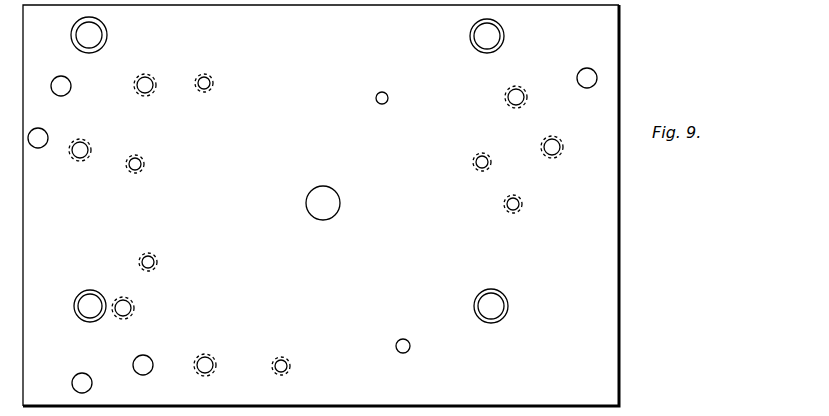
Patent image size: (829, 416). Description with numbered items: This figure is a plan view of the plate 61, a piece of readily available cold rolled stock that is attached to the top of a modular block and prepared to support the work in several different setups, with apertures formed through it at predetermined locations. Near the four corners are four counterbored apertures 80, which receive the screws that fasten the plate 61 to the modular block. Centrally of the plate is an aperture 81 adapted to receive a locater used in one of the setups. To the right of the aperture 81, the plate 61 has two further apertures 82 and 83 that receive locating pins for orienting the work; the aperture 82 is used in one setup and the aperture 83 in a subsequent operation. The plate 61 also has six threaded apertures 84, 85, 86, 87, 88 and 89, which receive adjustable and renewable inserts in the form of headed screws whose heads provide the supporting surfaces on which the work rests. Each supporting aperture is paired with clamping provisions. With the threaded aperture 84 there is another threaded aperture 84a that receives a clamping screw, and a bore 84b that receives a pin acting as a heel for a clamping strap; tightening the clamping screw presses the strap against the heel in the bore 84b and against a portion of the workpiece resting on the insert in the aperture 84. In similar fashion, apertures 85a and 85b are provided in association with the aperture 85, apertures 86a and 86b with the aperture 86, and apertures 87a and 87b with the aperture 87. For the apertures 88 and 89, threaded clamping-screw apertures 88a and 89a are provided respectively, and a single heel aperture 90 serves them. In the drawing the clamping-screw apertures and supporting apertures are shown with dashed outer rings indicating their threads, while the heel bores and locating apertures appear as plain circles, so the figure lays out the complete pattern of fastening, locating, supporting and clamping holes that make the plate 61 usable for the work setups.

The plate 61 is at (626, 69).
The counterbored apertures 80 is at (104, 35).
The central aperture 81 is at (322, 196).
The aperture 82 is at (386, 93).
The aperture 83 is at (404, 339).
The threaded aperture 84 is at (210, 88).
The threaded aperture 84a is at (148, 93).
The bore 84b is at (64, 96).
The threaded aperture 85 is at (141, 164).
The threaded aperture 85a is at (83, 158).
The heel aperture 85b is at (40, 148).
The threaded aperture 86 is at (152, 257).
The threaded aperture 86a is at (130, 303).
The heel aperture 86b is at (83, 373).
The threaded aperture 87 is at (283, 360).
The threaded aperture 87a is at (210, 358).
The heel aperture 87b is at (148, 357).
The threaded aperture 88 is at (512, 211).
The threaded aperture 88a is at (558, 156).
The threaded aperture 89 is at (477, 168).
The threaded aperture 89a is at (513, 105).
The heel aperture 90 is at (582, 88).